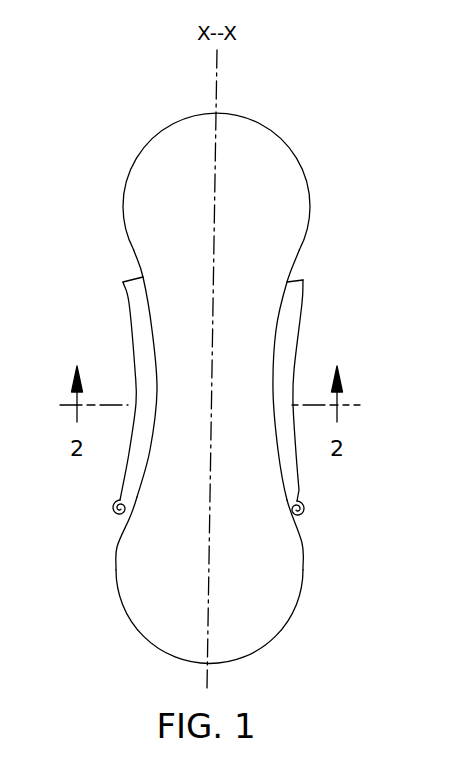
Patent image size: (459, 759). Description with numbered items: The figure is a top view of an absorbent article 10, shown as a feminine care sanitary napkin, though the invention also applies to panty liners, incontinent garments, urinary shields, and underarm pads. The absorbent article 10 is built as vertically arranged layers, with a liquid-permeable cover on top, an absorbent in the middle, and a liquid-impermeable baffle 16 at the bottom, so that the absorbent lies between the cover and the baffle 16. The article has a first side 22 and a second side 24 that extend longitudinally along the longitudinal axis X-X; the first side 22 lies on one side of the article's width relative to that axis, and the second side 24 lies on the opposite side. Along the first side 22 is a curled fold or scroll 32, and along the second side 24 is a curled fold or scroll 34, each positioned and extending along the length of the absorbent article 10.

The absorbent article 10 is at (96, 172).
The liquid-impermeable baffle 16 is at (288, 204).
The first side 22 is at (118, 545).
The second side 24 is at (302, 545).
The curled fold or scroll 32 is at (130, 308).
The curled fold or scroll 34 is at (302, 305).